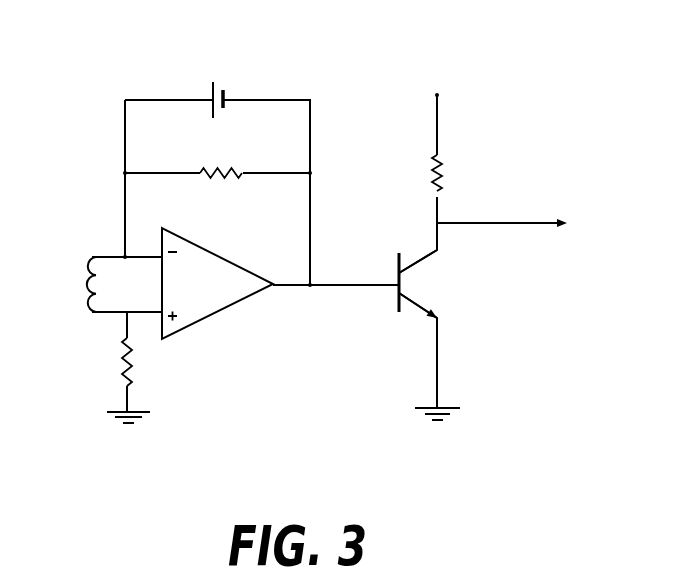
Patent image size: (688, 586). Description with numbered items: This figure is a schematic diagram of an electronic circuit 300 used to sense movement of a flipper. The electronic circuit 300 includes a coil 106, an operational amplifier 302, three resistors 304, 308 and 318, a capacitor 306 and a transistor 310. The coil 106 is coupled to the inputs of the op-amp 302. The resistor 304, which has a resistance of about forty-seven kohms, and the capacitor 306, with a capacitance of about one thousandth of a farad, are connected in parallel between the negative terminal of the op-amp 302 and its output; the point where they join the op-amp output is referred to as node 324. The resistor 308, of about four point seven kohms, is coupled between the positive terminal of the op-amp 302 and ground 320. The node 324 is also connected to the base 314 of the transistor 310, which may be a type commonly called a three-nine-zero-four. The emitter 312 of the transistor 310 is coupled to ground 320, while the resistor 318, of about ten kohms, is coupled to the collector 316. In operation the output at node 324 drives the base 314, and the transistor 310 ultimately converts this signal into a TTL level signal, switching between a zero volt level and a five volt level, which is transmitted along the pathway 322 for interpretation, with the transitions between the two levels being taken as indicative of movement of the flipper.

The electronic circuit 300 is at (490, 43).
The operational amplifier 302 is at (207, 256).
The resistor 304 is at (233, 173).
The capacitor 306 is at (166, 100).
The resistor 308 is at (124, 368).
The transistor 310 is at (410, 283).
The emitter 312 is at (412, 300).
The base 314 is at (397, 281).
The collector 316 is at (424, 257).
The resistor 318 is at (443, 170).
The ground 320 is at (128, 428).
The pathway 322 is at (540, 222).
The node 324 is at (306, 287).
The coil 106 is at (92, 288).